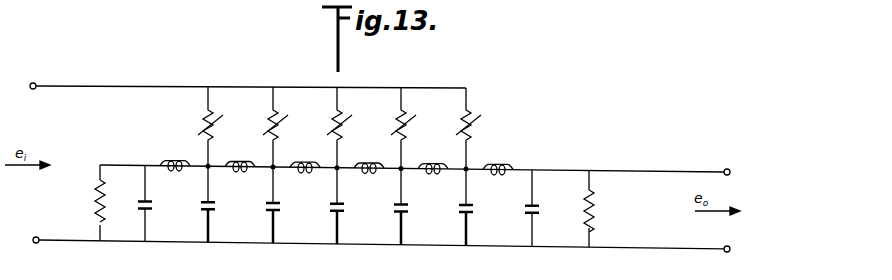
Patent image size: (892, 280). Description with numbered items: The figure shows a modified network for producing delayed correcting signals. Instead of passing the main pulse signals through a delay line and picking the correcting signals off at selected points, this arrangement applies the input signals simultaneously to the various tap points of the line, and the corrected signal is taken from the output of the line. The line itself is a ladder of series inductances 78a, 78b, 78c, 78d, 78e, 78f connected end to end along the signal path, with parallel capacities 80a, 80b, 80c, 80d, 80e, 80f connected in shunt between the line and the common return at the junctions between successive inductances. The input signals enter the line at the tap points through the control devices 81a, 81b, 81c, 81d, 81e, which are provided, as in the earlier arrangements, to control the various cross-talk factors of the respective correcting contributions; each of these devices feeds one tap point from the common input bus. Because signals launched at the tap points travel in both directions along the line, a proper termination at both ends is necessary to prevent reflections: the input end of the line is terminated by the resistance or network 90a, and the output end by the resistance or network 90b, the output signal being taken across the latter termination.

The series inductance 78a is at (176, 160).
The series inductance 78b is at (241, 160).
The series inductance 78c is at (306, 160).
The series inductance 78d is at (370, 161).
The series inductance 78e is at (434, 161).
The series inductance 78f is at (499, 162).
The parallel capacity 80a is at (168, 192).
The parallel capacity 80b is at (235, 190).
The parallel capacity 80c is at (300, 191).
The parallel capacity 80d is at (364, 192).
The parallel capacity 80e is at (428, 193).
The parallel capacity 80f is at (493, 194).
The control device 81a is at (224, 145).
The control device 81b is at (289, 145).
The control device 81c is at (353, 146).
The control device 81d is at (418, 146).
The control device 81e is at (482, 146).
The terminating resistance 90a is at (98, 211).
The terminating resistance 90b is at (591, 225).